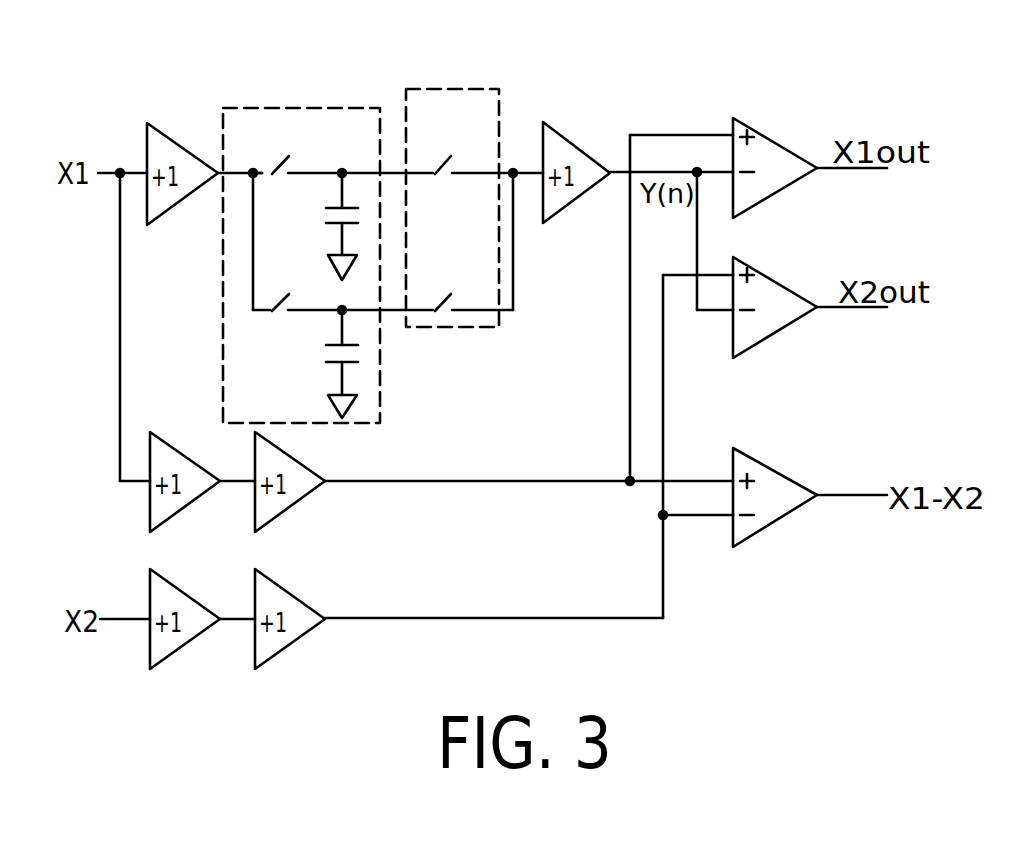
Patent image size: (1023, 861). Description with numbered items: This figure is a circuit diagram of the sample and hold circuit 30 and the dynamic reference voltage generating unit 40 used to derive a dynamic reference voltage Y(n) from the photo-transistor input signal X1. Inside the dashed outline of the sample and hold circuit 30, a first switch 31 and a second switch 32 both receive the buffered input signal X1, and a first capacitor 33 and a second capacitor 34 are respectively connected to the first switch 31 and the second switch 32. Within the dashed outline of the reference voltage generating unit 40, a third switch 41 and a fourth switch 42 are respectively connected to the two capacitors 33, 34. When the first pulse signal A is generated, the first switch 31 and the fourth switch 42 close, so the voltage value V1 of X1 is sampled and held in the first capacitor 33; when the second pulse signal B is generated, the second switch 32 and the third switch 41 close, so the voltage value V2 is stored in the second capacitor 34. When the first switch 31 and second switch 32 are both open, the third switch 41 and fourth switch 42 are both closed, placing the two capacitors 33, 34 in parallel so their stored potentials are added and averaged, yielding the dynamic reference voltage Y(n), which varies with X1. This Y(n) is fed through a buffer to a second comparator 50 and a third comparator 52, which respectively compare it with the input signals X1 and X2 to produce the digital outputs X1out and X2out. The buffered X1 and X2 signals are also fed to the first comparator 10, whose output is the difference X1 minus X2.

The first comparator 10 is at (778, 518).
The sample and hold circuit 30 is at (300, 106).
The first switch 31 is at (272, 170).
The second switch 32 is at (277, 316).
The first capacitor 33 is at (329, 208).
The second capacitor 34 is at (358, 347).
The dynamic reference voltage generating unit 40 is at (448, 87).
The third switch 41 is at (446, 165).
The fourth switch 42 is at (446, 318).
The second comparator 50 is at (782, 143).
The third comparator 52 is at (782, 281).